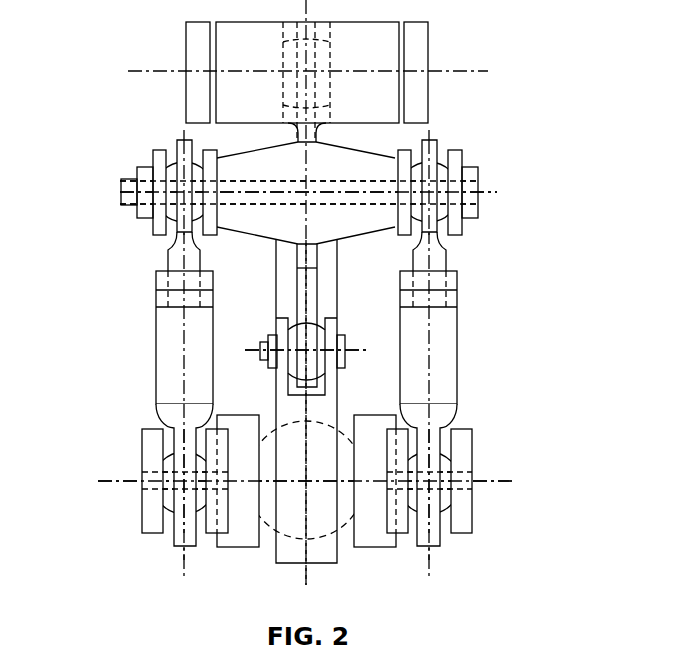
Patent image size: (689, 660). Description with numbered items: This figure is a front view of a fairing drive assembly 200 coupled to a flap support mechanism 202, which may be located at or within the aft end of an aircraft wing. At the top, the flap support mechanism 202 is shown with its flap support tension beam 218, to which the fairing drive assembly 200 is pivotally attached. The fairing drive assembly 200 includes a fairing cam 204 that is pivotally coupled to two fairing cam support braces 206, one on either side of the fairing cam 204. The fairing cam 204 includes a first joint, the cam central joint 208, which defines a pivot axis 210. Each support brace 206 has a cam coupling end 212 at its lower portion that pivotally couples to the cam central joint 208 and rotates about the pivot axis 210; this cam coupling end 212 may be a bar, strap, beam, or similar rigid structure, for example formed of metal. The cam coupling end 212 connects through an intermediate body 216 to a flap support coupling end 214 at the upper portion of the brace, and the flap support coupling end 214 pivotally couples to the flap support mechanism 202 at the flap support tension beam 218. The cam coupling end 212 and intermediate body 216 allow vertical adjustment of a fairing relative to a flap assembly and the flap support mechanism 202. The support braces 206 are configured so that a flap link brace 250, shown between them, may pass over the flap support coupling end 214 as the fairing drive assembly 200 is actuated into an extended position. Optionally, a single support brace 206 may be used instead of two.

The fairing drive assembly 200 is at (103, 291).
The flap support mechanism 202 is at (397, 23).
The fairing cam 204 is at (323, 457).
The fairing cam support brace 206 is at (178, 349).
The cam central joint 208 is at (272, 505).
The pivot axis 210 is at (116, 483).
The cam coupling end 212 is at (142, 513).
The flap support coupling end 214 is at (137, 202).
The intermediate body 216 is at (155, 367).
The flap support tension beam 218 is at (263, 167).
The flap link brace 250 is at (338, 328).